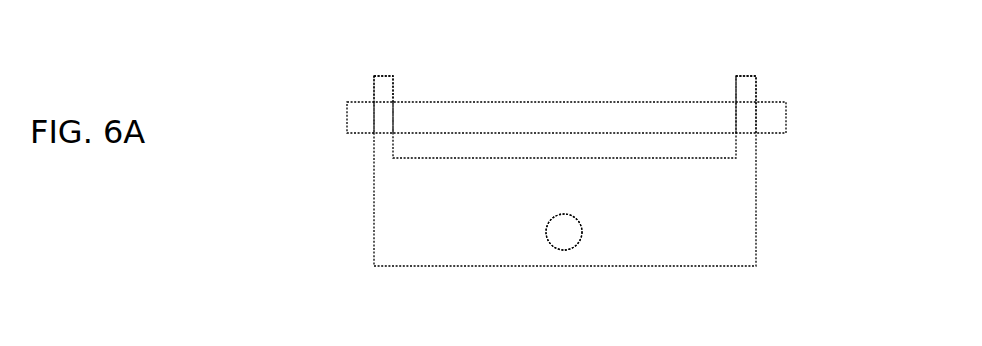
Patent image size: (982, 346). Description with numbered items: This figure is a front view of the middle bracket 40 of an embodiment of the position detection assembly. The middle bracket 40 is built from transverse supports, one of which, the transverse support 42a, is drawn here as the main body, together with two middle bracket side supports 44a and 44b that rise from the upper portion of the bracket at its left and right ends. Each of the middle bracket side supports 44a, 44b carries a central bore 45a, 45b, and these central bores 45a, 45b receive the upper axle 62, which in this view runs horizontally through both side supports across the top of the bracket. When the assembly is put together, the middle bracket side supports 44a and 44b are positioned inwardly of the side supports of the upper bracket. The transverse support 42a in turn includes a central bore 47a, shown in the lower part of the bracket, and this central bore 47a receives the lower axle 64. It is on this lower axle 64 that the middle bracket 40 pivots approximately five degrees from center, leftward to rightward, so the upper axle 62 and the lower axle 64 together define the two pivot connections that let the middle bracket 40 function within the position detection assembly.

The middle bracket 40 is at (266, 252).
The transverse support 42a is at (686, 266).
The middle bracket side support 44a is at (384, 74).
The middle bracket side support 44b is at (749, 76).
The central bore 45a is at (383, 122).
The central bore 45b is at (744, 121).
The upper axle 62 is at (786, 118).
The lower axle 64 is at (550, 231).
The central bore 47a is at (564, 250).